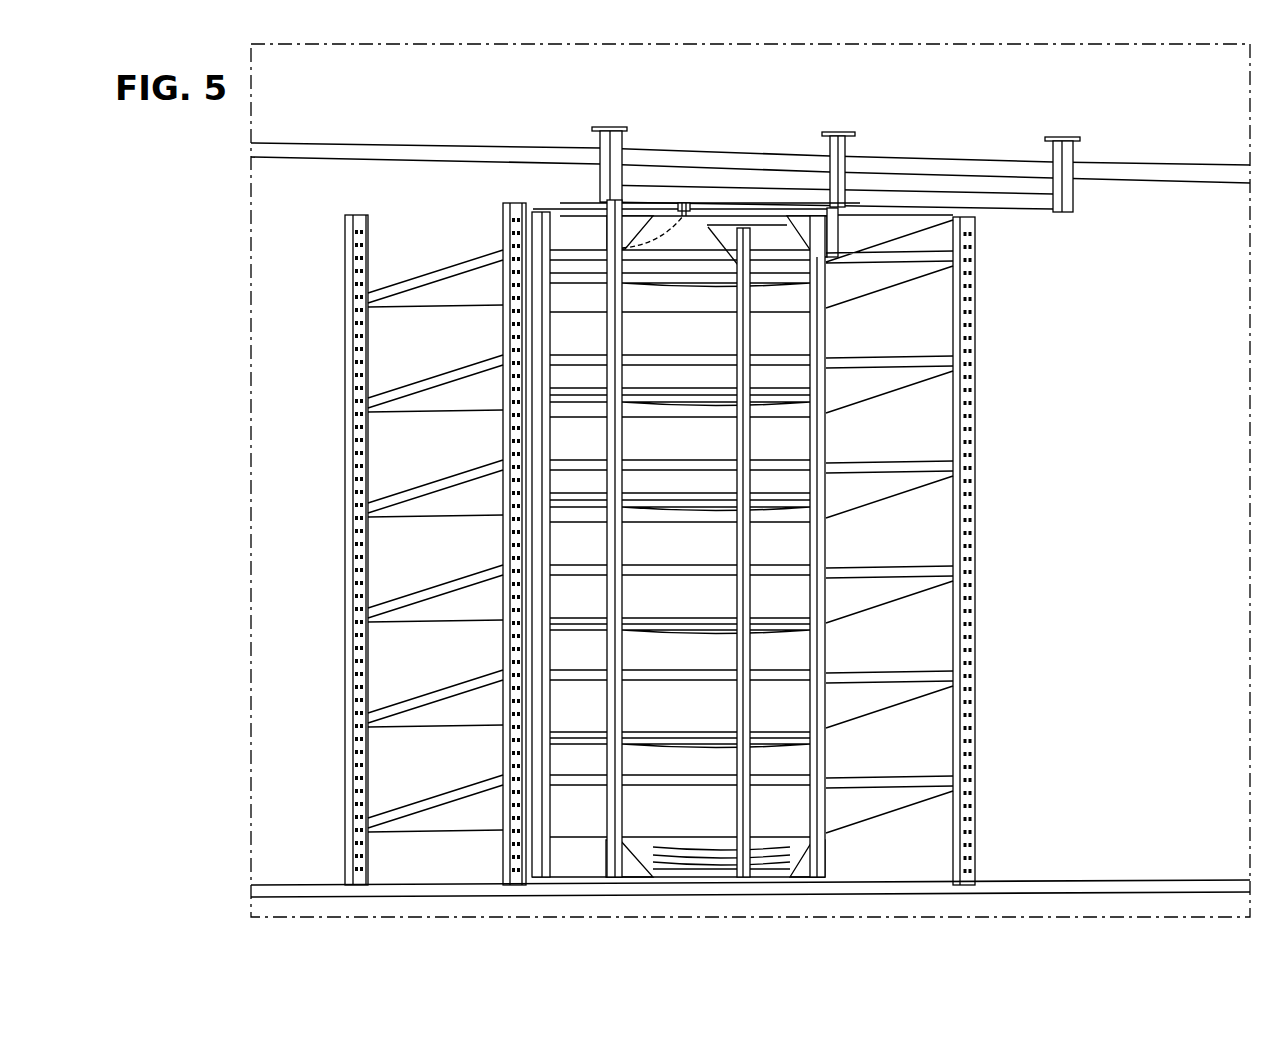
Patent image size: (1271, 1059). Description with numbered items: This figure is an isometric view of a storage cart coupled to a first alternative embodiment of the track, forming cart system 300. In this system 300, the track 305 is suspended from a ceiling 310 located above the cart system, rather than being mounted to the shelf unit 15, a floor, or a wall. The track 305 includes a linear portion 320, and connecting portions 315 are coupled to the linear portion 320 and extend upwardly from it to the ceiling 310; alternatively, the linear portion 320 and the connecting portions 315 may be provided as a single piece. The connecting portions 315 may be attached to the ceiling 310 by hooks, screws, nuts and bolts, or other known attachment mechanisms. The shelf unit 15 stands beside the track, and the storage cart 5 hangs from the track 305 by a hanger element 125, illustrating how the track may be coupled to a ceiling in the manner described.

The storage tower / rack structure 5 is at (826, 548).
The shelf unit 15 is at (342, 450).
The trolley bracket 125 is at (622, 248).
The system 300 is at (750, 133).
The track 305 is at (1078, 167).
The ceiling 310 is at (938, 148).
The connecting portions 315 is at (705, 186).
The linear portion 320 is at (1017, 200).